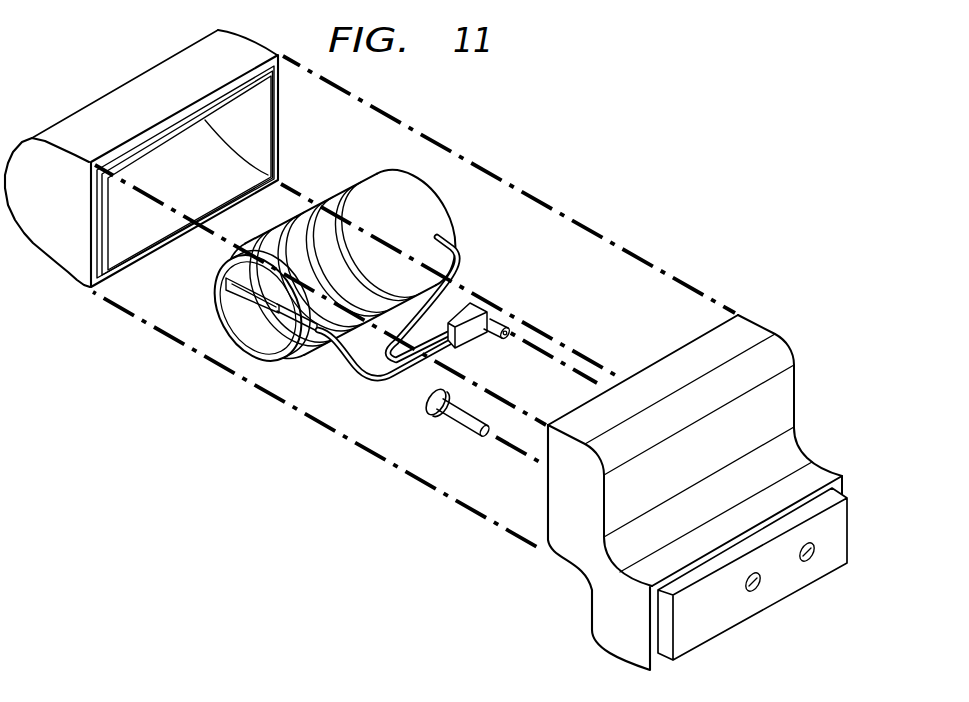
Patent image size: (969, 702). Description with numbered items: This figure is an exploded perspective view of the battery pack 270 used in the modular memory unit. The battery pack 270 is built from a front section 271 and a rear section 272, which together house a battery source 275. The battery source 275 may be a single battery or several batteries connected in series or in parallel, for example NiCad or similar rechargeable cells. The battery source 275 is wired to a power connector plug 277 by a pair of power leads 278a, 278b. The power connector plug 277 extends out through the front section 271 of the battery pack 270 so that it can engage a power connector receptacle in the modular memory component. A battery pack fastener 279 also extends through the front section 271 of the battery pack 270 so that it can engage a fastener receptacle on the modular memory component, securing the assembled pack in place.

The battery pack 270 is at (606, 202).
The front section 271 is at (566, 601).
The rear section 272 is at (97, 108).
The battery source 275 is at (369, 172).
The power connector plug 277 is at (474, 336).
The power lead 278a is at (343, 358).
The power lead 278b is at (477, 238).
The battery pack fastener 279 is at (452, 422).